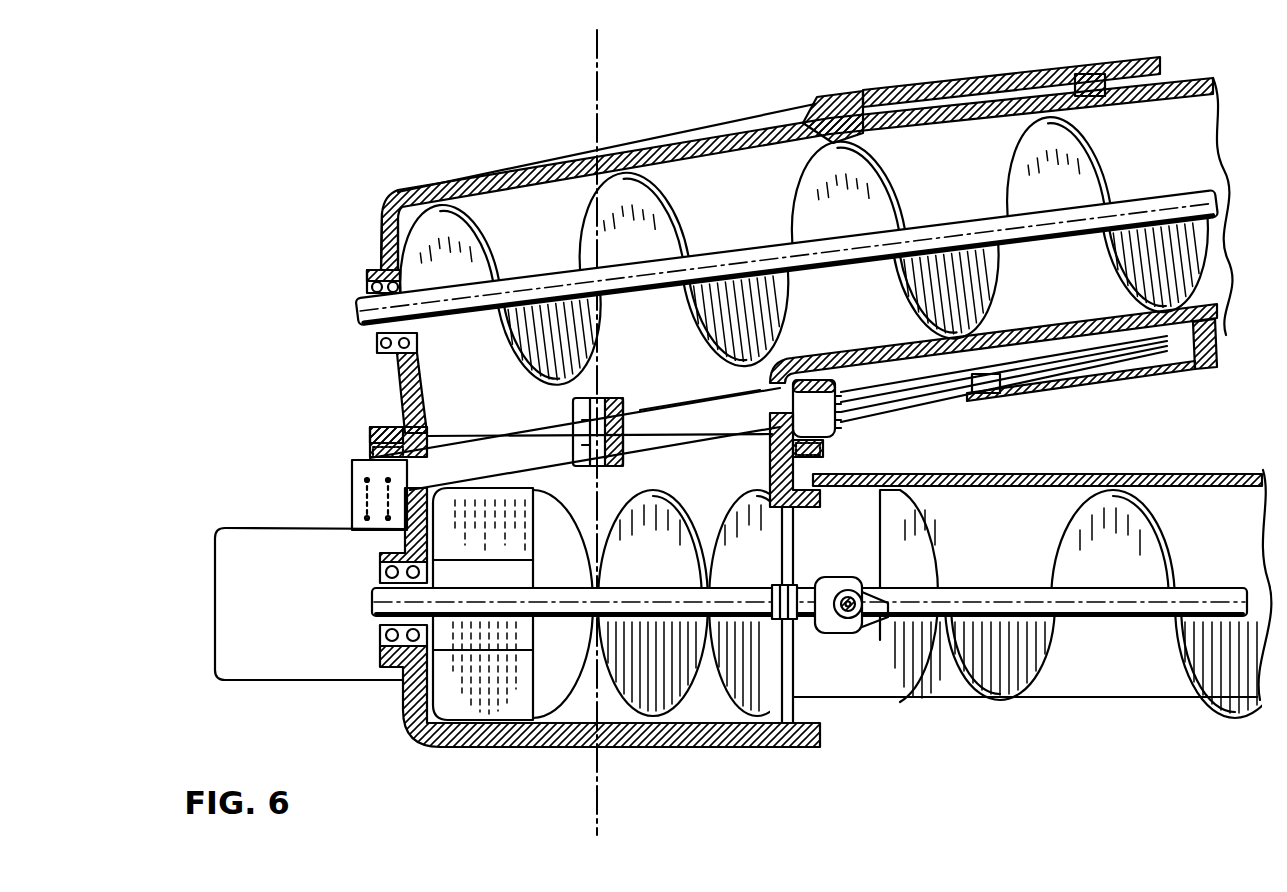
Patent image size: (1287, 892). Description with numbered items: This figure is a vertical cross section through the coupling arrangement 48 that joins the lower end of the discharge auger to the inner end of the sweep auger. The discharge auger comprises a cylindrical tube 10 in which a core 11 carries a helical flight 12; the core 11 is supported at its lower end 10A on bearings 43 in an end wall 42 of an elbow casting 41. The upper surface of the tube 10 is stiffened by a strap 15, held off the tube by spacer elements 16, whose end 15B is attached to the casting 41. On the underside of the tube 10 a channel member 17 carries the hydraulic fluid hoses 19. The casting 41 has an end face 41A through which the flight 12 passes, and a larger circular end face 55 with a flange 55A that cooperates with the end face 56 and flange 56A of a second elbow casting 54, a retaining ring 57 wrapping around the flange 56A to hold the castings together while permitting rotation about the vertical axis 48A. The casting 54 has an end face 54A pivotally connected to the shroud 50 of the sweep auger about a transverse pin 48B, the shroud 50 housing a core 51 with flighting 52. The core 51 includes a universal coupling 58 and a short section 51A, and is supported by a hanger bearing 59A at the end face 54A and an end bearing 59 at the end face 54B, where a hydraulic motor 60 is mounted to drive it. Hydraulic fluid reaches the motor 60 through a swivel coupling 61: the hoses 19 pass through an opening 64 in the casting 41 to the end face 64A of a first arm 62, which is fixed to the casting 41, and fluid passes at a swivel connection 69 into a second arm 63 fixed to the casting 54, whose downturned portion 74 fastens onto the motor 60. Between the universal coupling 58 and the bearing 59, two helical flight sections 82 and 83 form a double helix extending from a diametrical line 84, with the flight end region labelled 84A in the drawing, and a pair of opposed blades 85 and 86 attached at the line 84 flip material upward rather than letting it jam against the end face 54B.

The discharge tube 10 is at (1190, 72).
The lower end of tube 10A is at (872, 357).
The core 11 is at (787, 257).
The flight 12 is at (803, 252).
The strap 15 is at (964, 90).
The end of strap 15B is at (839, 100).
The spacer elements 16 is at (1082, 82).
The channel member 17 is at (1137, 388).
The hydraulic fluid hoses 19 is at (1000, 392).
The elbow casting 41 is at (391, 188).
The end face 41A is at (787, 255).
The end wall 42 is at (380, 240).
The bearings 43 is at (370, 289).
The coupling arrangement 48 is at (657, 93).
The vertical axis 48A is at (590, 80).
The transverse pin 48B is at (870, 617).
The shroud 50 is at (1040, 604).
The core 51 is at (809, 603).
The short section 51A is at (619, 604).
The flighting 52 is at (1000, 690).
The elbow casting 54 is at (609, 601).
The end face 54A is at (820, 715).
The end face 54B is at (403, 690).
The circular end face 55 is at (430, 430).
The flange 55A is at (385, 413).
The end face 56 is at (430, 447).
The flange 56A is at (370, 437).
The retaining ring 57 is at (370, 455).
The universal coupling 58 is at (857, 573).
The end bearing 59 is at (378, 629).
The hanger bearing 59A is at (800, 632).
The hydraulic motor 60 is at (237, 524).
The swivel coupling 61 is at (614, 384).
The first arm 62 is at (682, 404).
The second arm 63 is at (521, 460).
The opening 64 is at (766, 388).
The end face of arm 64A is at (886, 400).
The swivel connection 69 is at (583, 424).
The downturned portion 74 is at (352, 490).
The helical flight section 82 is at (545, 512).
The helical flight section 83 is at (548, 672).
The line 84 is at (772, 545).
The auger flight end plate 84A is at (535, 538).
The blade 85 is at (515, 648).
The blade 86 is at (515, 566).